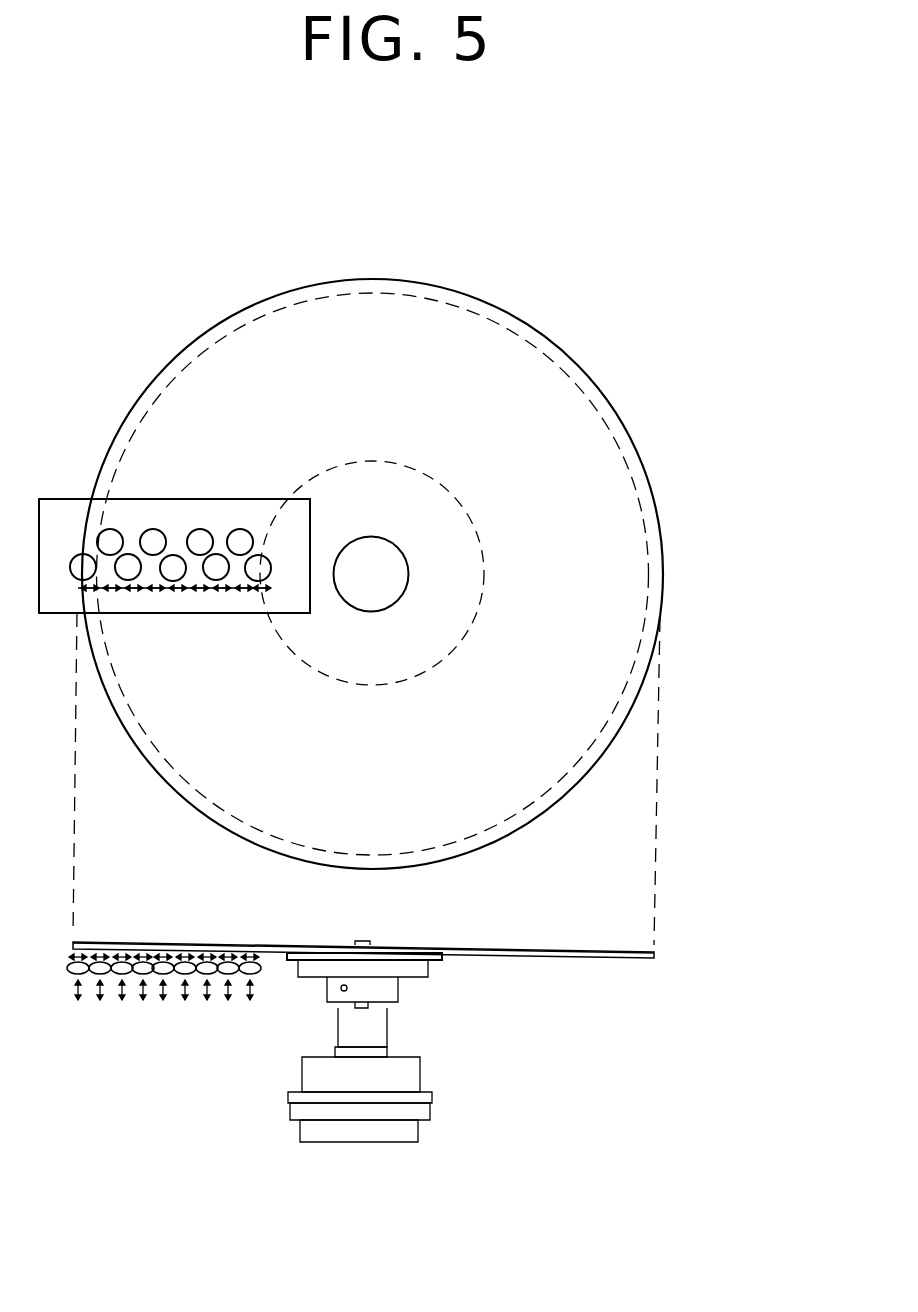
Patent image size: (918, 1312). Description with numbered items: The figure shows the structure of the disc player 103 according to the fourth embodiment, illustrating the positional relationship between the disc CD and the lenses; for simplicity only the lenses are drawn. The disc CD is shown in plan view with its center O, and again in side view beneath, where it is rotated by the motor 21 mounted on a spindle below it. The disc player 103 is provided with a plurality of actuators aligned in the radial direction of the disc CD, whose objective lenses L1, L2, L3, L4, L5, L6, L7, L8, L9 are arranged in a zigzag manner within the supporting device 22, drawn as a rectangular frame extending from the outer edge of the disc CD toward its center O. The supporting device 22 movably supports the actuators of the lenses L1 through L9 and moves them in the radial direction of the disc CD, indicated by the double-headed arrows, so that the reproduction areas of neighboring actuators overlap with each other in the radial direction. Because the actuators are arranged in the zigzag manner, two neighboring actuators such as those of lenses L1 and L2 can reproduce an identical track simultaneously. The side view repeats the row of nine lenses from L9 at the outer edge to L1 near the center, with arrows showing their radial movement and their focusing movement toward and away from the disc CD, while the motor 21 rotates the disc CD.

The disc player 103 is at (622, 298).
The disc CD is at (533, 370).
The supporting device 22 is at (227, 498).
The center hole O is at (392, 546).
The lens L1 is at (262, 564).
The lens L2 is at (233, 520).
The lens L3 is at (229, 578).
The lens L4 is at (191, 540).
The lens L5 is at (183, 578).
The lens L6 is at (153, 529).
The lens L7 is at (136, 578).
The lens L8 is at (110, 529).
The lens L9 is at (96, 578).
The motor 21 is at (420, 1064).